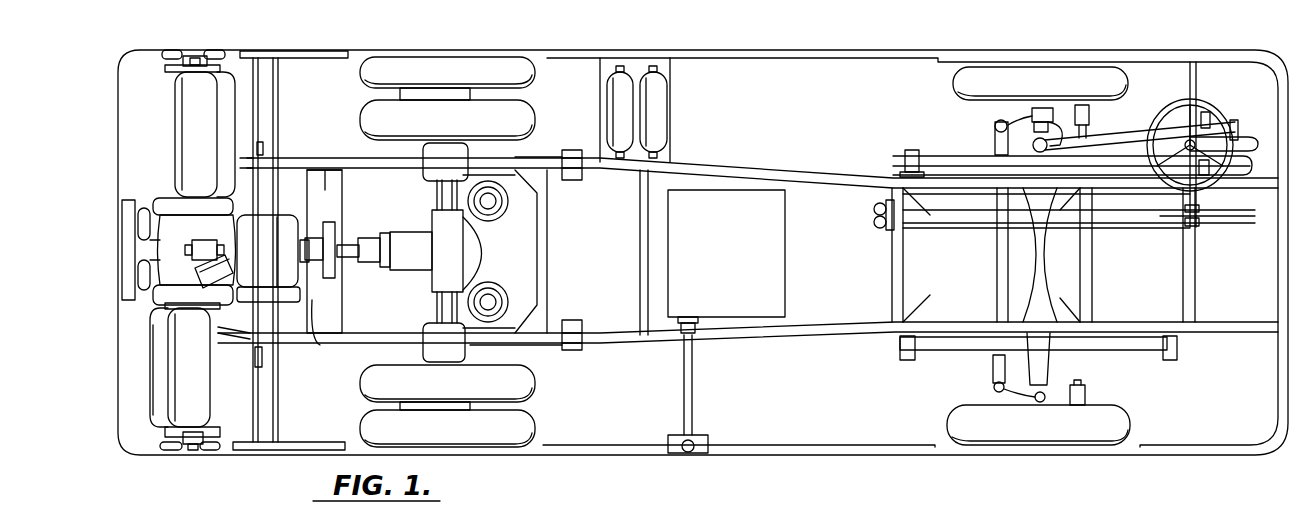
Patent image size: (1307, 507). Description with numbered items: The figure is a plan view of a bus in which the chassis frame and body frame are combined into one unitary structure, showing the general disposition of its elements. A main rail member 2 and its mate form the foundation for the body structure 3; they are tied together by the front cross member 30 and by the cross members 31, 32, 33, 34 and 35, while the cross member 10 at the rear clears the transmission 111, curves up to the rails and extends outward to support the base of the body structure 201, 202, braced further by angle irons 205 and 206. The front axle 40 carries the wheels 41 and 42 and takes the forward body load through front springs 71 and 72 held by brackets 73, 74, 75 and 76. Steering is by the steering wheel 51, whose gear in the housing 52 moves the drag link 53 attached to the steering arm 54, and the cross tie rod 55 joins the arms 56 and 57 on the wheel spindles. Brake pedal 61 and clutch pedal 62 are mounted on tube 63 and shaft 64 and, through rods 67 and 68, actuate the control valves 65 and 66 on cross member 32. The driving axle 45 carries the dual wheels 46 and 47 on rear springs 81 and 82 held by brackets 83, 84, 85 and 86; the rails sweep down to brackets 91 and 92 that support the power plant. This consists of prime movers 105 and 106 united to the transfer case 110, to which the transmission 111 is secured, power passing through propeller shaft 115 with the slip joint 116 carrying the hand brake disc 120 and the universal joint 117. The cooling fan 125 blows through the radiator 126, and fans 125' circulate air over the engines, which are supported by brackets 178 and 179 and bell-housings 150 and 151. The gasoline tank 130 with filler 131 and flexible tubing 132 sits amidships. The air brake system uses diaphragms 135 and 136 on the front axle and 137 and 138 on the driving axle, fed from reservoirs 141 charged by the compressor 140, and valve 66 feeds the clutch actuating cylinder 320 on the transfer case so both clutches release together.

The main rail member 2 is at (765, 168).
The body structure 3 is at (782, 52).
The cross member 10 is at (262, 403).
The front cross member 30 is at (1280, 290).
The cross member 31 is at (1090, 262).
The cross member 32 is at (893, 272).
The cross member 33 is at (640, 268).
The cross member 34 is at (540, 242).
The cross member 35 is at (335, 184).
The front axle 40 is at (1040, 265).
The front wheel 41 is at (990, 445).
The front wheel 42 is at (953, 84).
The driving axle 45 is at (440, 272).
The dual wheel 46 is at (520, 425).
The dual wheel 47 is at (520, 108).
The steering wheel 51 is at (1168, 118).
The steering gear housing 52 is at (1240, 151).
The drag link 53 is at (1090, 143).
The steering arm 54 is at (1055, 105).
The cross tie rod 55 is at (997, 288).
The arm 56 is at (993, 395).
The arm 57 is at (1010, 120).
The brake pedal 61 is at (1215, 185).
The clutch pedal 62 is at (1205, 113).
The tube 63 is at (1200, 210).
The shaft 64 is at (1195, 225).
The brake control valve 65 is at (874, 208).
The clutch control valve 66 is at (874, 222).
The rod 67 is at (950, 199).
The rod 68 is at (968, 227).
The front spring 71 is at (1118, 348).
The front spring 72 is at (962, 156).
The bracket 73 is at (1172, 363).
The bracket 74 is at (908, 360).
The bracket 75 is at (1163, 222).
The bracket 76 is at (905, 152).
The rear spring 81 is at (540, 350).
The rear spring 82 is at (515, 155).
The bracket 83 is at (575, 352).
The bracket 84 is at (312, 348).
The bracket 85 is at (575, 150).
The bracket 86 is at (312, 157).
The bracket 91 is at (232, 330).
The bracket 92 is at (247, 158).
The prime mover 105 is at (155, 398).
The prime mover 106 is at (185, 117).
The transfer case 110 is at (178, 212).
The transmission 111 is at (302, 238).
The propeller shaft 115 is at (340, 243).
The slip type universal joint 116 is at (300, 345).
The universal joint 117 is at (362, 262).
The hand brake disc 120 is at (342, 312).
The cooling fan 125 is at (142, 265).
The fan 125' is at (198, 253).
The radiator 126 is at (125, 200).
The gasoline tank 130 is at (770, 300).
The filler 131 is at (700, 447).
The flexible tubing 132 is at (692, 393).
The actuating diaphragm 135 is at (1080, 390).
The actuating diaphragm 136 is at (1098, 105).
The actuating diaphragm 137 is at (486, 288).
The actuating diaphragm 138 is at (484, 218).
The compressor 140 is at (200, 247).
The reservoirs 141 is at (625, 128).
The bell-housing 150 is at (170, 320).
The bell-housing 151 is at (182, 118).
The bracket 178 is at (222, 452).
The bracket 179 is at (228, 62).
The body structure base 201 is at (282, 445).
The body structure base 202 is at (297, 51).
The angle iron 205 is at (258, 360).
The angle iron 206 is at (260, 145).
The clutch actuating cylinder 320 is at (248, 237).